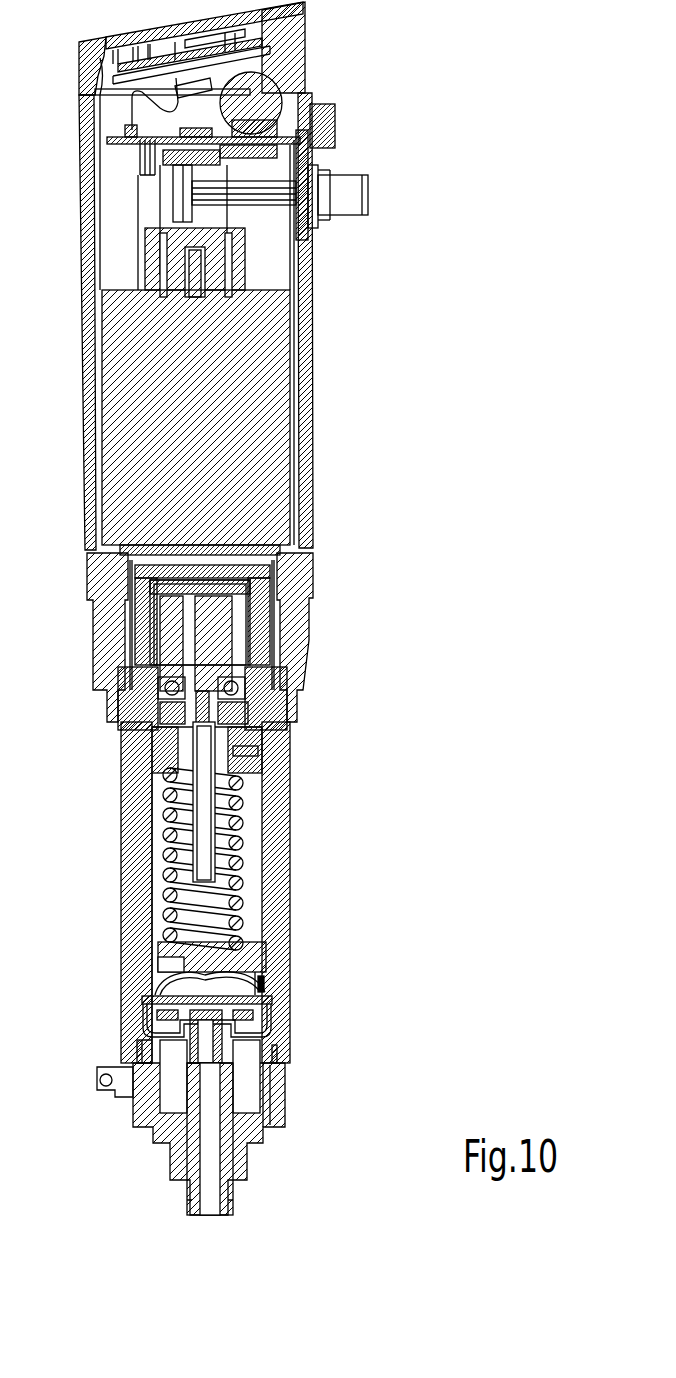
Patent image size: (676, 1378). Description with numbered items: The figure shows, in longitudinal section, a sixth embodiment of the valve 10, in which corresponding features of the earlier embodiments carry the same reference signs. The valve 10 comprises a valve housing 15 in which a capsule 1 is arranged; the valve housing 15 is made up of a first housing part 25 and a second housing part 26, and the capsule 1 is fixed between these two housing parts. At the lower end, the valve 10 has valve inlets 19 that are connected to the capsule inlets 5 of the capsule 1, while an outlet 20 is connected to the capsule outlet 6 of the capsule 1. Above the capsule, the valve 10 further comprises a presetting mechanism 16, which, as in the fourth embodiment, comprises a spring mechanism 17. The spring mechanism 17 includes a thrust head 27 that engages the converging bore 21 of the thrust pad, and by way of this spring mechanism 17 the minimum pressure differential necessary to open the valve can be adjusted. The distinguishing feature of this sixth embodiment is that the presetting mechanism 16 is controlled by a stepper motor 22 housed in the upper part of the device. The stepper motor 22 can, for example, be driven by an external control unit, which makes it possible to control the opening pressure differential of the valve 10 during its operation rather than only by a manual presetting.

The valve 10 is at (432, 736).
The stepper motor 22 is at (313, 386).
The presetting mechanism 16 is at (289, 718).
The valve housing 15 is at (278, 795).
The first housing part 25 is at (140, 922).
The spring mechanism 17 is at (247, 842).
The thrust head 27 is at (175, 958).
The converging bore 21 is at (258, 974).
The capsule 1 is at (266, 986).
The capsule inlets 5 is at (177, 1035).
The capsule outlet 6 is at (253, 1031).
The valve inlets 19 is at (142, 1108).
The second housing part 26 is at (272, 1108).
The outlet 20 is at (207, 1155).